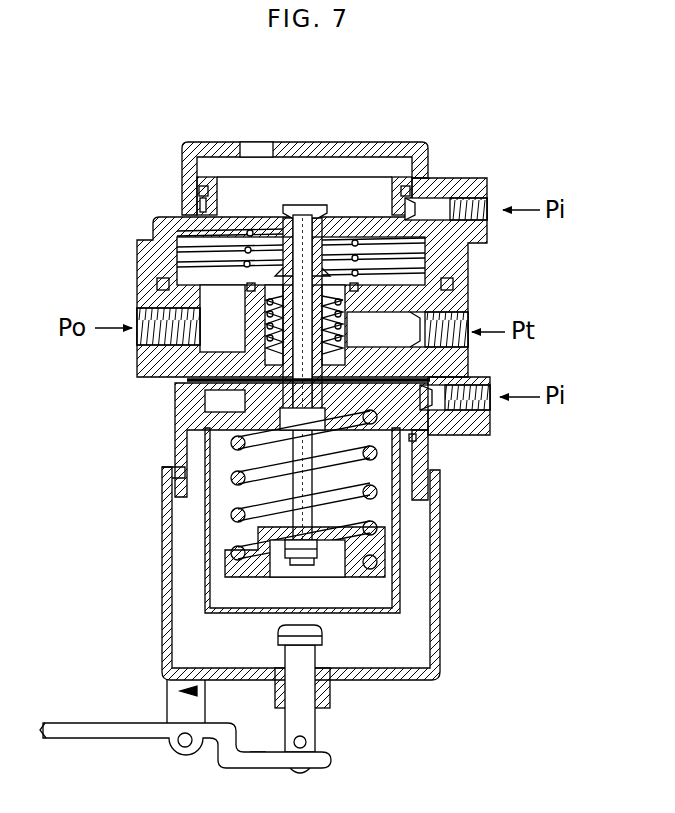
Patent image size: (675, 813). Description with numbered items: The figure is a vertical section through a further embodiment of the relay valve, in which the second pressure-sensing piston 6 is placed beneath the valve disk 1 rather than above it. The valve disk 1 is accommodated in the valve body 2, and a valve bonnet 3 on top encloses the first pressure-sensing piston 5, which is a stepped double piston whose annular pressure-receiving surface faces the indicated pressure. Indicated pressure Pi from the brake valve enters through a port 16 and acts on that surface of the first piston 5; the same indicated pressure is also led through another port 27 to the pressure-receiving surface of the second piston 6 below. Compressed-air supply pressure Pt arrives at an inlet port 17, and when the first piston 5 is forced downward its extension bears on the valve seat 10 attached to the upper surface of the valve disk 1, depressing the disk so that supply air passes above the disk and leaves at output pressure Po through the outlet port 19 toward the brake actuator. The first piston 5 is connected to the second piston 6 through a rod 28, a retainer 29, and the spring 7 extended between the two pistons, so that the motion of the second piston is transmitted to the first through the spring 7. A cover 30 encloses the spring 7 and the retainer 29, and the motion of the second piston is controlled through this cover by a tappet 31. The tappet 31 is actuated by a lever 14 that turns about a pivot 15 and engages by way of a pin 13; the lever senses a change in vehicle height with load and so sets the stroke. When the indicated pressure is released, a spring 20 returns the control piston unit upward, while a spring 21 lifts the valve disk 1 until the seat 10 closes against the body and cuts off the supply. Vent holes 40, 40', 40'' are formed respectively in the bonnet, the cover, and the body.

The valve disk 1 is at (265, 345).
The valve body 2 is at (176, 452).
The valve bonnet 3 is at (206, 148).
The first pressure-sensing piston 5 is at (201, 193).
The second pressure-sensing piston 6 is at (414, 441).
The spring 7 is at (377, 525).
The valve seat 10 is at (365, 281).
The pin 13 is at (299, 750).
The lever 14 is at (117, 736).
The pivot 15 is at (179, 735).
The port 16 is at (478, 208).
The inlet port 17 is at (462, 318).
The outlet port 19 is at (143, 320).
The spring 20 is at (246, 237).
The spring 21 is at (346, 340).
The port 27 is at (488, 404).
The rod 28 is at (308, 228).
The retainer 29 is at (386, 572).
The cover 30 is at (402, 624).
The tappet 31 is at (318, 738).
The vent hole 40 is at (242, 120).
The vent hole 40' is at (301, 599).
The vent hole 40'' is at (478, 671).